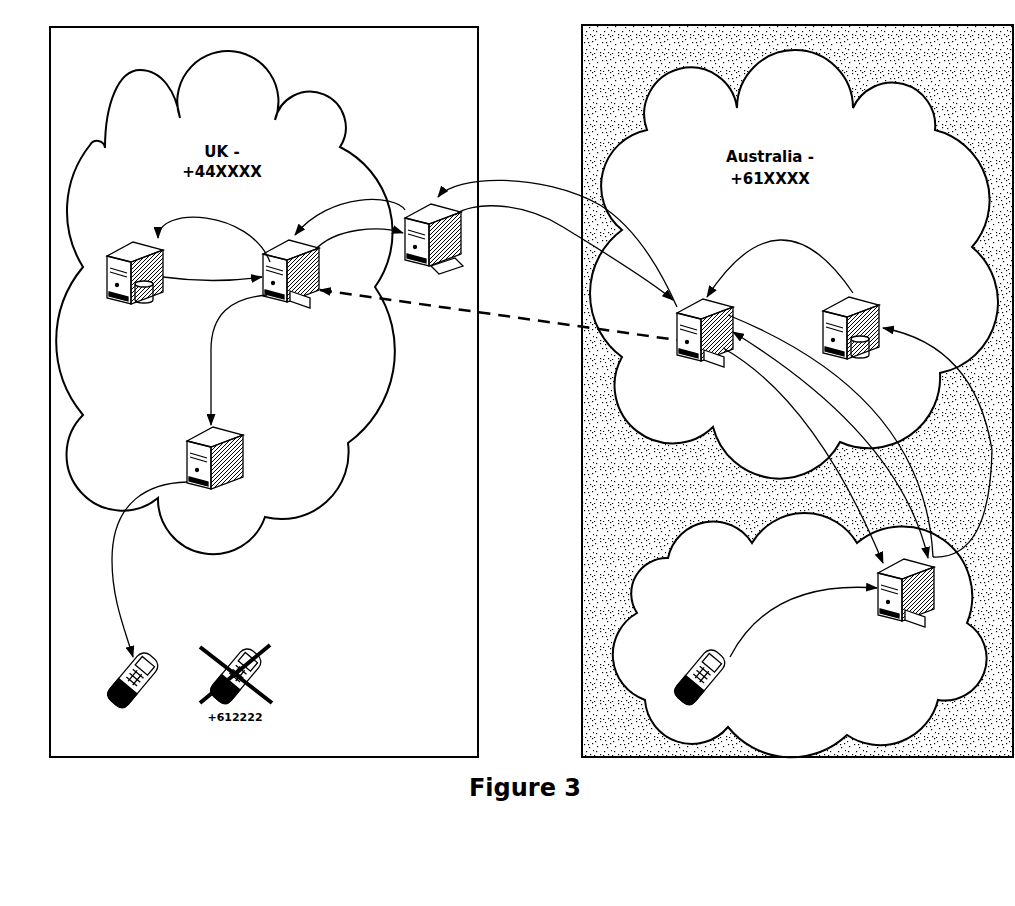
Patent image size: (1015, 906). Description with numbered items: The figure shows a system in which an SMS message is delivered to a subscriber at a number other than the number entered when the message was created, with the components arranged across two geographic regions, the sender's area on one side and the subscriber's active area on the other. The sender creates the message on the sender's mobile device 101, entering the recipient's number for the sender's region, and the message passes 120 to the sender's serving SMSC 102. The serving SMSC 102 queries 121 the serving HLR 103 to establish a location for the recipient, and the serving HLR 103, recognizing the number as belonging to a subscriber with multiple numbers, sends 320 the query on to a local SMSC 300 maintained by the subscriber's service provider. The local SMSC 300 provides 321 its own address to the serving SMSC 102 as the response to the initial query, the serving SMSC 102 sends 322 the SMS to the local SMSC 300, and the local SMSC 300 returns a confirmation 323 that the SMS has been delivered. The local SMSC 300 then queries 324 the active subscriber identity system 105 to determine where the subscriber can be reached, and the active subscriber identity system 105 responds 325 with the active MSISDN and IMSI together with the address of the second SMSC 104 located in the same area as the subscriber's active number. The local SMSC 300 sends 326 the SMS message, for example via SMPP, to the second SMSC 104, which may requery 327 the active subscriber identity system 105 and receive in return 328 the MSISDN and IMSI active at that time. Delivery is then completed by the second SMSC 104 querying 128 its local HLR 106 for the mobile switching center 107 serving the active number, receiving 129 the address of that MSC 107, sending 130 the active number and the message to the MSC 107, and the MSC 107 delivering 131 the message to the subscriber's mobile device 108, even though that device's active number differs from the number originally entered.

The sender's mobile device 101 is at (694, 683).
The sender's serving SMSC 102 is at (922, 593).
The serving HLR 103 is at (862, 320).
The second SMSC 104 is at (291, 282).
The active subscriber identity system 105 is at (433, 247).
The local HLR 106 is at (131, 267).
The mobile switching center 107 is at (215, 473).
The subscriber's mobile device 108 is at (125, 686).
The message sending 120 is at (803, 622).
The query to serving HLR 121 is at (937, 442).
The query to local HLR 128 is at (214, 230).
The MSC address response 129 is at (212, 268).
The message send to MSC 130 is at (222, 360).
The message delivery 131 is at (149, 561).
The local SMSC 300 is at (705, 340).
The query forwarding 320 is at (780, 254).
The address response 321 is at (830, 436).
The SMS send to local SMSC 322 is at (830, 445).
The delivery confirmation 323 is at (803, 455).
The query to active subscriber identity system 324 is at (557, 233).
The active number response 325 is at (564, 249).
The SMS forwarding 326 is at (498, 314).
The requery 327 is at (359, 231).
The requery response 328 is at (350, 206).